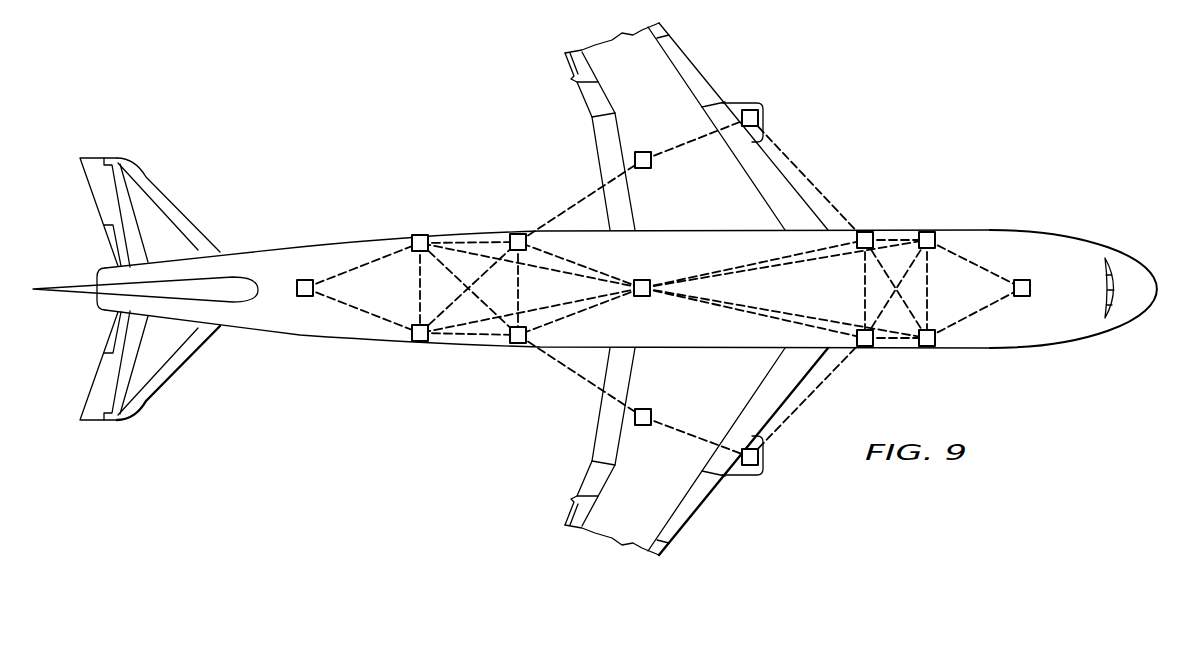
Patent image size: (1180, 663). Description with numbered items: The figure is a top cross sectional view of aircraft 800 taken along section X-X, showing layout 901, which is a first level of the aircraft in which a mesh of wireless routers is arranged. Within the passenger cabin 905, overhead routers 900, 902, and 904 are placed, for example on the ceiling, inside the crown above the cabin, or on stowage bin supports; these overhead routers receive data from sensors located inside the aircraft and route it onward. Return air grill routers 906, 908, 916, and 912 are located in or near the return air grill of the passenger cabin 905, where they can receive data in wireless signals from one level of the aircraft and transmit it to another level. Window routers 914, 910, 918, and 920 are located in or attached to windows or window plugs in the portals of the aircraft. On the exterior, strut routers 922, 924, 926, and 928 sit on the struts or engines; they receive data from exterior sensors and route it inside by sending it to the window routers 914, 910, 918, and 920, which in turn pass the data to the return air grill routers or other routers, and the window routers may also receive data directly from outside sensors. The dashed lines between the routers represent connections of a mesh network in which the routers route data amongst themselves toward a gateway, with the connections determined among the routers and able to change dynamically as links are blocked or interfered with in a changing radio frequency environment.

The aircraft 800 is at (362, 241).
The overhead router 900 is at (303, 279).
The layout 901 is at (985, 203).
The overhead router 902 is at (646, 280).
The overhead router 904 is at (1031, 288).
The passenger cabin 905 is at (1027, 333).
The return air grill router 906 is at (421, 234).
The return air grill router 908 is at (421, 342).
The window router 910 is at (517, 344).
The return air grill router 912 is at (927, 347).
The window router 914 is at (517, 233).
The return air grill router 916 is at (924, 231).
The window router 918 is at (868, 231).
The window router 920 is at (877, 347).
The strut router 922 is at (646, 151).
The strut router 924 is at (749, 109).
The strut router 926 is at (645, 426).
The strut router 928 is at (752, 477).